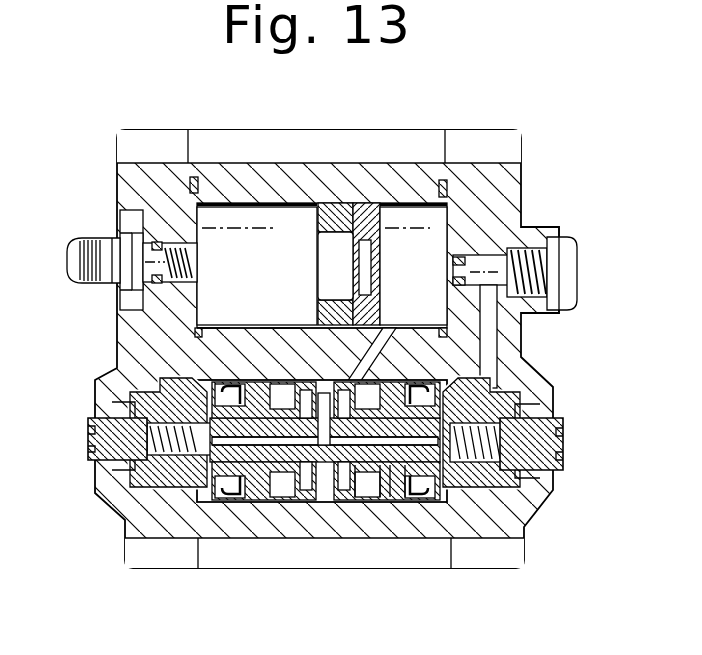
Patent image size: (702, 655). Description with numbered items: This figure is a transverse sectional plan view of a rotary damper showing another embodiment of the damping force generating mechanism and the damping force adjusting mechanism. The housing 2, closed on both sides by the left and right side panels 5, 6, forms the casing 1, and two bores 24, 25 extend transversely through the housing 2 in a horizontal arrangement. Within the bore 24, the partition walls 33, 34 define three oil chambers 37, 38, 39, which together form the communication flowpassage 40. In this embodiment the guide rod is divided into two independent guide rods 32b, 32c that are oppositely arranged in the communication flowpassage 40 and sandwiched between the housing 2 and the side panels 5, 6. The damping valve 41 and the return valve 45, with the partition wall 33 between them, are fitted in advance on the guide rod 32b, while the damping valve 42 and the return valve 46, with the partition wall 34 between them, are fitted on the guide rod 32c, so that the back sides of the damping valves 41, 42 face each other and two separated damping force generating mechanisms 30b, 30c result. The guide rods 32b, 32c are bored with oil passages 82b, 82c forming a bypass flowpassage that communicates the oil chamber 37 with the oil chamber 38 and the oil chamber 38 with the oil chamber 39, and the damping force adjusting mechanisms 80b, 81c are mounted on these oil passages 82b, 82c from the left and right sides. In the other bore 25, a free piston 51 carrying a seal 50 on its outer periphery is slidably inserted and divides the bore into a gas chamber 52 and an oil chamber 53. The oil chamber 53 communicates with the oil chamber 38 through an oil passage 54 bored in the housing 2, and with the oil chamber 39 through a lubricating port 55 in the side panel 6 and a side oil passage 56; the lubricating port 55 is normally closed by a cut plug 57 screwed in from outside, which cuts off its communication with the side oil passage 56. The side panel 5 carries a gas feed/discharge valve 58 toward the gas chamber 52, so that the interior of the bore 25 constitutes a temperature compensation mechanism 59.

The casing 1 is at (406, 131).
The housing 2 is at (221, 172).
The left side panel 5 is at (137, 180).
The right side panel 6 is at (513, 180).
The bore 24 is at (258, 450).
The bore 25 is at (262, 200).
The damping force generating mechanism 30b is at (165, 372).
The damping force generating mechanism 30c is at (498, 395).
The guide rod 32b is at (145, 468).
The guide rod 32c is at (555, 488).
The partition wall 33 is at (205, 500).
The partition wall 34 is at (400, 500).
The oil chamber 37 is at (150, 507).
The oil chamber 38 is at (325, 490).
The oil chamber 39 is at (520, 530).
The communication flowpassage 40 is at (323, 423).
The damping valve 41 is at (287, 337).
The damping valve 42 is at (378, 500).
The return valve 45 is at (230, 337).
The return valve 46 is at (410, 500).
The seal 50 is at (338, 203).
The free piston 51 is at (318, 222).
The gas chamber 52 is at (239, 277).
The oil chamber 53 is at (398, 270).
The oil passage 54 is at (404, 330).
The lubricating port 55 is at (524, 210).
The side oil passage 56 is at (483, 345).
The cut plug 57 is at (578, 283).
The gas feed/discharge valve 58 is at (72, 258).
The temperature compensation mechanism 59 is at (184, 301).
The damping force adjusting mechanism 80b is at (88, 428).
The damping force adjusting mechanism 81c is at (565, 432).
The oil passage 82b is at (215, 492).
The oil passage 82c is at (425, 495).